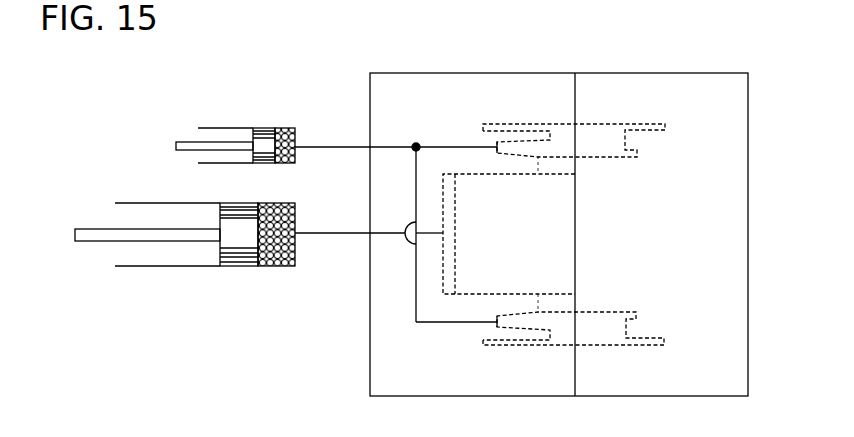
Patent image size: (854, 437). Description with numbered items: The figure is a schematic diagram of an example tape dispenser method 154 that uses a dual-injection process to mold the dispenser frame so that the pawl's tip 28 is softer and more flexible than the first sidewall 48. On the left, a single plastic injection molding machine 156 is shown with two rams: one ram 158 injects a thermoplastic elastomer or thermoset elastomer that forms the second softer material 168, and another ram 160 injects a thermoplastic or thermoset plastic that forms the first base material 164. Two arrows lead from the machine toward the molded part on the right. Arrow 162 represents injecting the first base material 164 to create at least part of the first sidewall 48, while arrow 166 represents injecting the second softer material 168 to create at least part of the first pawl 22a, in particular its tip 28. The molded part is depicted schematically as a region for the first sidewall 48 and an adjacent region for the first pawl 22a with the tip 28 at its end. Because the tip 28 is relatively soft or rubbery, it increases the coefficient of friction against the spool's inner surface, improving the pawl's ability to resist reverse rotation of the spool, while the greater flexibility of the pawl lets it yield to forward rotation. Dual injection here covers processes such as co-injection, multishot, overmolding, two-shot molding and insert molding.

The tape dispenser method 154 is at (93, 75).
The ram 158 is at (264, 127).
The second softer material 168 is at (281, 129).
The arrow 166 is at (356, 140).
The plastic injection molding machine 156 is at (297, 288).
The ram 160 is at (238, 268).
The first base material 164 is at (278, 203).
The arrow 162 is at (358, 241).
The tip 28 is at (495, 146).
The first pawl 22a is at (513, 155).
The first sidewall 48 is at (643, 123).